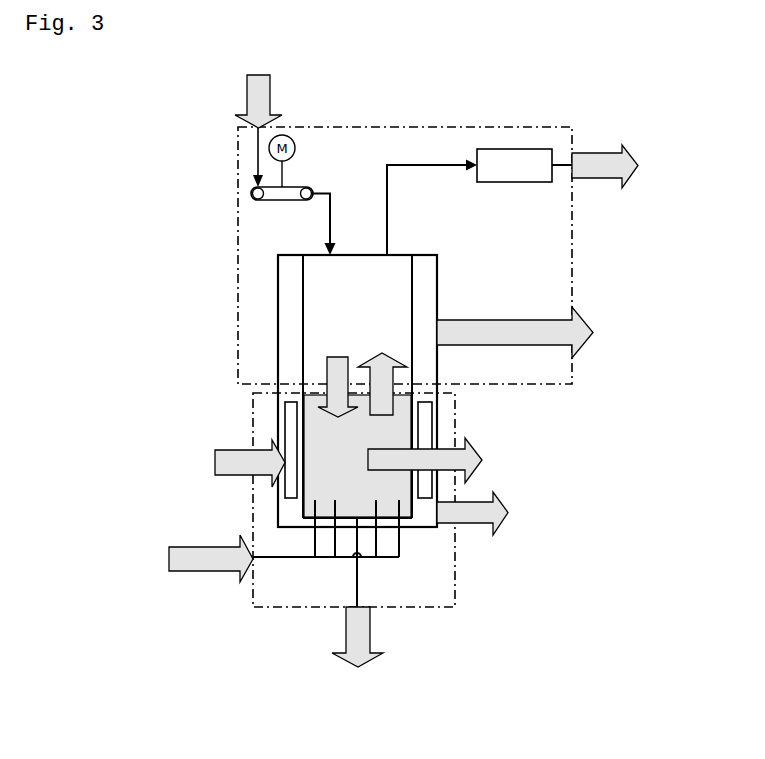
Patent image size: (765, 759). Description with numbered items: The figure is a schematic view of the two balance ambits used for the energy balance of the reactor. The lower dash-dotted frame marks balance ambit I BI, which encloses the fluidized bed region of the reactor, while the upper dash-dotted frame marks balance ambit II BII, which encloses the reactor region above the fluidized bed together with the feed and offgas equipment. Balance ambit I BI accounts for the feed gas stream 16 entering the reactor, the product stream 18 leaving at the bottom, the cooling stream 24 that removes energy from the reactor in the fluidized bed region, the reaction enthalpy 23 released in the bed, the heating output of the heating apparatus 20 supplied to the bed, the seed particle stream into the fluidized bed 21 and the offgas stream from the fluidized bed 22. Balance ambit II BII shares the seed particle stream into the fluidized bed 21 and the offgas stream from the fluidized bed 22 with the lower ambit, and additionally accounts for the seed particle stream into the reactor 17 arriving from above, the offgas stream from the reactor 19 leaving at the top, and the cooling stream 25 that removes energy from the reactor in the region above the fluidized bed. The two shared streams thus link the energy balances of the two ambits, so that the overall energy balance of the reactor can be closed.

The feed gas stream 16 is at (194, 558).
The seed particle stream into the reactor 17 is at (258, 89).
The product stream 18 is at (357, 652).
The offgas stream from the reactor 19 is at (623, 166).
The heating output of the heating apparatus 20 is at (233, 463).
The seed particle stream into the fluidized bed 21 is at (338, 372).
The offgas stream from the fluidized bed 22 is at (382, 371).
The reaction enthalpy 23 is at (443, 460).
The cooling stream 24 is at (490, 513).
The cooling stream 25 is at (533, 332).
The balance ambit I BI is at (455, 578).
The balance ambit II BII is at (572, 247).